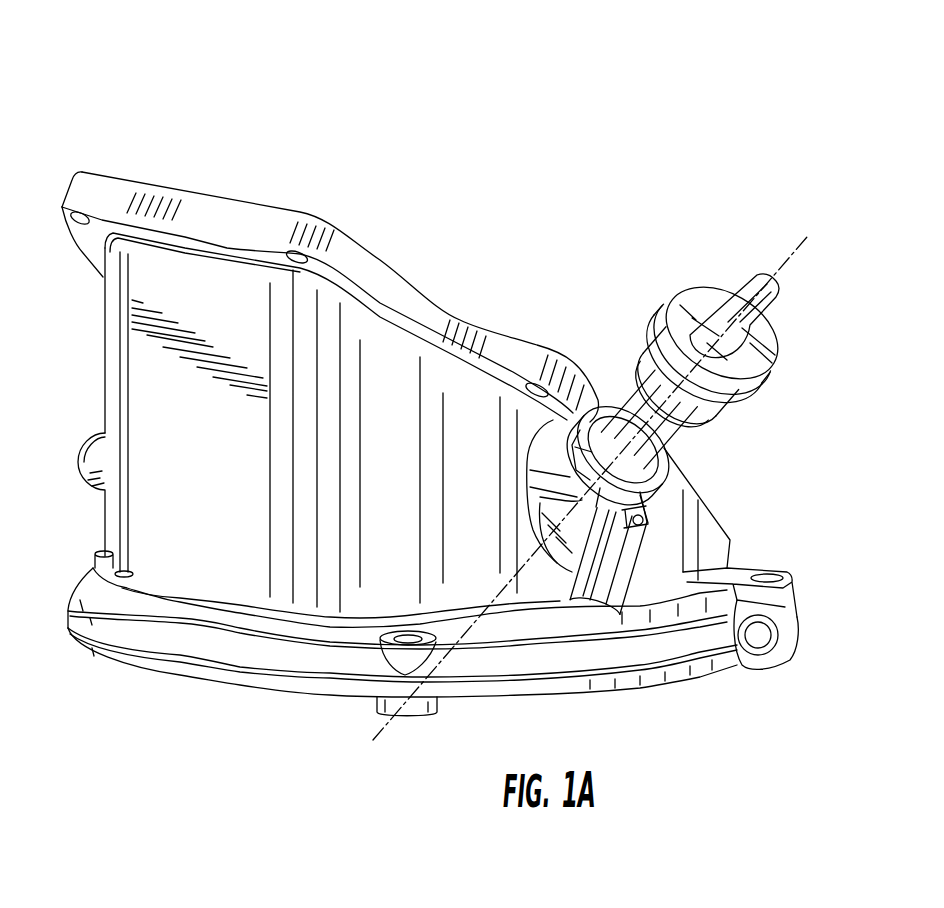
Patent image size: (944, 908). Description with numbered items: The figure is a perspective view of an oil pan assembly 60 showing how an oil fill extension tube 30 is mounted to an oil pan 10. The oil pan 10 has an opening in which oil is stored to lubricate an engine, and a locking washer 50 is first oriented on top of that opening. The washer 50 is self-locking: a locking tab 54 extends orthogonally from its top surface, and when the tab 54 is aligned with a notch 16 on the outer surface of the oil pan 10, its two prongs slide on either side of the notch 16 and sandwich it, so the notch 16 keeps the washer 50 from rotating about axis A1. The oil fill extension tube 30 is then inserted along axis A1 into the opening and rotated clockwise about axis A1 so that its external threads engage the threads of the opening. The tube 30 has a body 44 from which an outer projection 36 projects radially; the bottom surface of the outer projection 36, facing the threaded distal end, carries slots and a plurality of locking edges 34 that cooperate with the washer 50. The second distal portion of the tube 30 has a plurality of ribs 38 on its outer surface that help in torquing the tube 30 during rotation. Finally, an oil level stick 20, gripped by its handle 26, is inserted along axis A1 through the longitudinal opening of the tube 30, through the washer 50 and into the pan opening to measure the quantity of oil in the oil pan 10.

The oil pan 10 is at (108, 357).
The notch 16 is at (620, 485).
The oil level stick 20 is at (797, 316).
The handle 26 is at (757, 275).
The oil fill extension tube 30 is at (699, 449).
The locking edges 34 is at (590, 482).
The outer projection 36 is at (585, 443).
The ribs 38 is at (698, 400).
The body 44 is at (632, 410).
The locking washer 50 is at (548, 440).
The locking tab 54 is at (657, 522).
The oil pan assembly 60 is at (150, 82).
The axis A1 is at (589, 487).